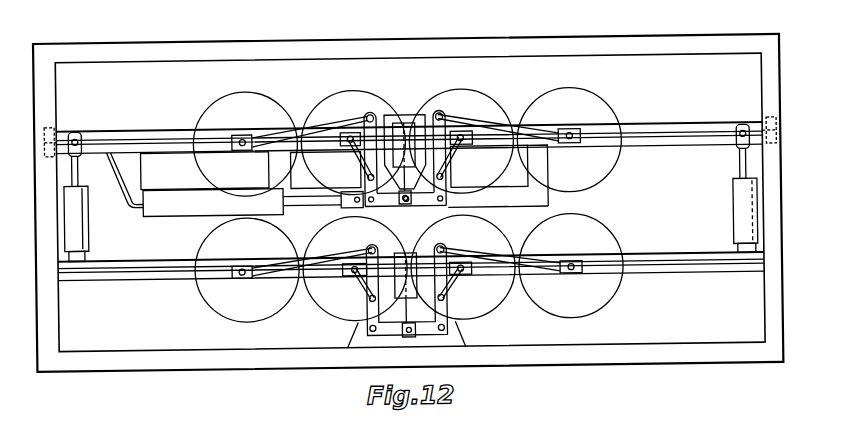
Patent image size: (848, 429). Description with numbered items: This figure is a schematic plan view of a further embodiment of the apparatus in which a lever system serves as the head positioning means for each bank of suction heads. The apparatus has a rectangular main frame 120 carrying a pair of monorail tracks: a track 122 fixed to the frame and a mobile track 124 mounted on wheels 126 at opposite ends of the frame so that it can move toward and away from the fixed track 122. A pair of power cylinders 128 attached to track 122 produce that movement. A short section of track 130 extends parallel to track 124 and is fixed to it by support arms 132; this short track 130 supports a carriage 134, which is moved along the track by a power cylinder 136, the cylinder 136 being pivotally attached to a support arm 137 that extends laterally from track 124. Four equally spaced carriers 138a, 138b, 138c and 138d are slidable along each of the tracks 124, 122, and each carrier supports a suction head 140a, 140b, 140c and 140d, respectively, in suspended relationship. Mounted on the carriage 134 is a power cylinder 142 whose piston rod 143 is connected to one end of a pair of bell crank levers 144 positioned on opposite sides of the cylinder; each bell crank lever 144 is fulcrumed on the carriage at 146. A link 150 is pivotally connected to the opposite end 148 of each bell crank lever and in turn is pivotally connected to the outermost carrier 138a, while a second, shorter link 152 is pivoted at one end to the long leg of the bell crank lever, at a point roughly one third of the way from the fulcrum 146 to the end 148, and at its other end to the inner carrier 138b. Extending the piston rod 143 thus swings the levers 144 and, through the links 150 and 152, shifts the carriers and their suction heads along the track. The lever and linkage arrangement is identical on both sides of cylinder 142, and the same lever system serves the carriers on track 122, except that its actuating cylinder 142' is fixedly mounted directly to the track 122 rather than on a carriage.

The main frame 120 is at (514, 53).
The fixed track 122 is at (652, 282).
The mobile track 124 is at (662, 137).
The wheels 126 is at (783, 133).
The power cylinders 128 is at (732, 224).
The short section of track 130 is at (530, 213).
The support arms 132 is at (537, 177).
The carriage 134 is at (446, 223).
The power cylinder 136 is at (205, 208).
The support arm 137 is at (125, 192).
The carrier 138a is at (563, 135).
The carrier 138b is at (460, 154).
The carrier 138c is at (339, 148).
The carrier 138d is at (253, 137).
The suction head 140a is at (606, 96).
The suction head 140b is at (492, 98).
The suction head 140c is at (330, 98).
The suction head 140d is at (220, 100).
The power cylinder 142 is at (401, 140).
The actuating cylinder 142' is at (373, 281).
The piston rod 143 is at (371, 172).
The bell crank levers 144 is at (383, 211).
The fulcrum 146 is at (449, 198).
The opposite end of bell crank lever 148 is at (437, 117).
The link 150 is at (483, 126).
The short link 152 is at (447, 175).